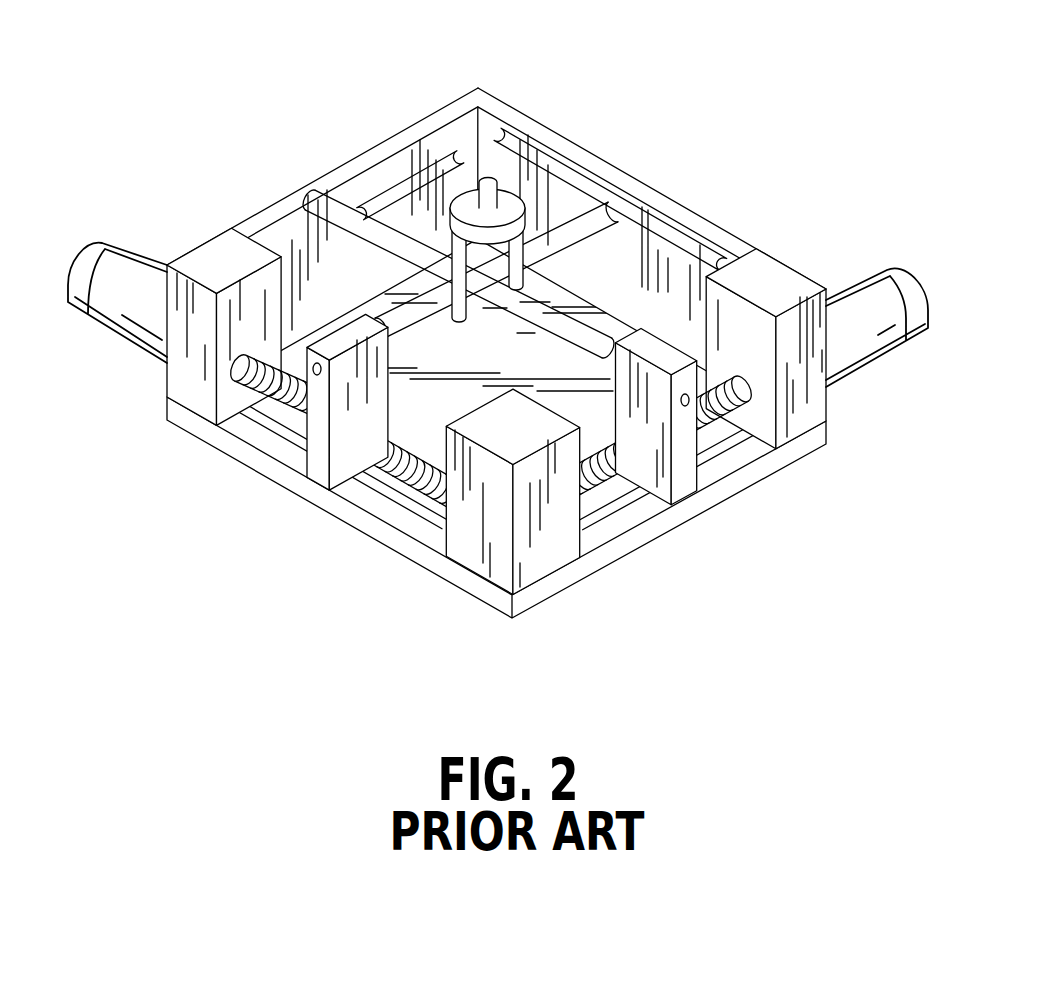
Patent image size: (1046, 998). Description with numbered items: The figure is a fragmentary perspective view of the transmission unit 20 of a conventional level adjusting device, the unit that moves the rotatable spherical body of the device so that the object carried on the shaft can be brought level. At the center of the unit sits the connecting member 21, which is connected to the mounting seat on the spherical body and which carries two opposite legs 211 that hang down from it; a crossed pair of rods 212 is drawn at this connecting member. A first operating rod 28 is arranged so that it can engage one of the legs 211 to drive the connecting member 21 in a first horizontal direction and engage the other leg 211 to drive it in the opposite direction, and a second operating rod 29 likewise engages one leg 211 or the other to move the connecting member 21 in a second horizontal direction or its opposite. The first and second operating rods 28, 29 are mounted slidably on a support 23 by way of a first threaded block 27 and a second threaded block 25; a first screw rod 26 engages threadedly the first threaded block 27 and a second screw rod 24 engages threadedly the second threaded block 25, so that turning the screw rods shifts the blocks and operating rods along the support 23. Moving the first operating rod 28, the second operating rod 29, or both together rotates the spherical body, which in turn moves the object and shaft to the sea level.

The transmission unit 20 is at (498, 342).
The connecting member 21 is at (520, 178).
The legs 211 is at (507, 190).
The cross rods of spindle 212 is at (432, 213).
The support 23 is at (384, 547).
The second screw rod 24 is at (713, 425).
The second threaded block 25 is at (683, 480).
The first screw rod 26 is at (262, 398).
The first threaded block 27 is at (312, 455).
The first operating rod 28 is at (585, 205).
The second operating rod 29 is at (380, 228).